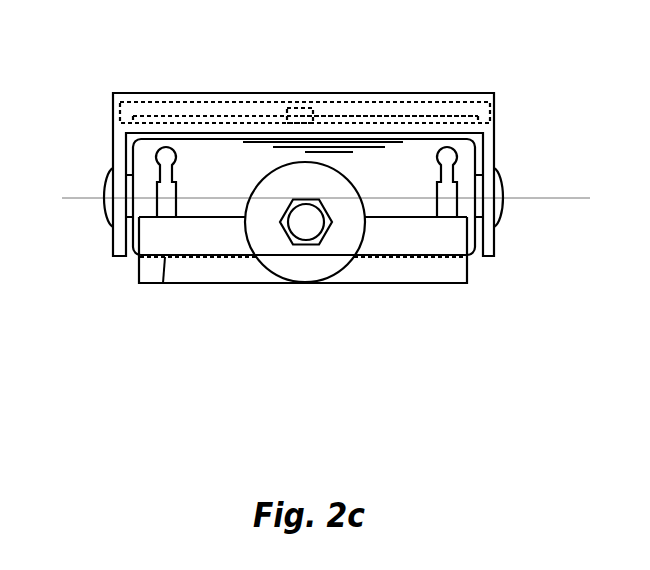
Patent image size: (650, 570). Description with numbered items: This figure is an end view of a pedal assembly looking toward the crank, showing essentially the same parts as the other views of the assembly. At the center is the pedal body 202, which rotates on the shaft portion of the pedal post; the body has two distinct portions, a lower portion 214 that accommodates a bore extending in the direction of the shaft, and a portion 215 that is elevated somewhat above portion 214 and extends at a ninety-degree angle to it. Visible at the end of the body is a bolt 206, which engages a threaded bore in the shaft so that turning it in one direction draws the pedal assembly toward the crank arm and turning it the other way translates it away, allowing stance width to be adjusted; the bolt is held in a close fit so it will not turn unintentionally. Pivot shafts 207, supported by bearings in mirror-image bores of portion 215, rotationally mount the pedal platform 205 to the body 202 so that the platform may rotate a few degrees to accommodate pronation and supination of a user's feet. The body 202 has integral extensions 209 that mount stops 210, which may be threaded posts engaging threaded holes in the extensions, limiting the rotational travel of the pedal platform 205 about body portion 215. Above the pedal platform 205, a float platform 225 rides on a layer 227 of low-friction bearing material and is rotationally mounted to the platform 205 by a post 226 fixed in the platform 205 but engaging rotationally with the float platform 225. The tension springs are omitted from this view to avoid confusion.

The pedal body 202 is at (307, 283).
The pedal platform 205 is at (492, 93).
The bolt 206 is at (302, 227).
The pivot shafts 207 is at (103, 193).
The integral extensions 209 is at (137, 273).
The stops 210 is at (163, 190).
The body portion 214 is at (362, 247).
The body portion 215 is at (163, 283).
The float platform 225 is at (193, 110).
The post 226 is at (298, 110).
The layer of low-friction bearing material 227 is at (347, 117).